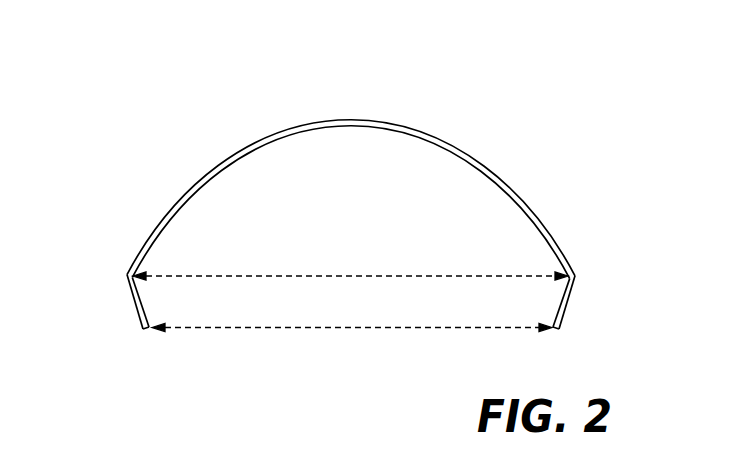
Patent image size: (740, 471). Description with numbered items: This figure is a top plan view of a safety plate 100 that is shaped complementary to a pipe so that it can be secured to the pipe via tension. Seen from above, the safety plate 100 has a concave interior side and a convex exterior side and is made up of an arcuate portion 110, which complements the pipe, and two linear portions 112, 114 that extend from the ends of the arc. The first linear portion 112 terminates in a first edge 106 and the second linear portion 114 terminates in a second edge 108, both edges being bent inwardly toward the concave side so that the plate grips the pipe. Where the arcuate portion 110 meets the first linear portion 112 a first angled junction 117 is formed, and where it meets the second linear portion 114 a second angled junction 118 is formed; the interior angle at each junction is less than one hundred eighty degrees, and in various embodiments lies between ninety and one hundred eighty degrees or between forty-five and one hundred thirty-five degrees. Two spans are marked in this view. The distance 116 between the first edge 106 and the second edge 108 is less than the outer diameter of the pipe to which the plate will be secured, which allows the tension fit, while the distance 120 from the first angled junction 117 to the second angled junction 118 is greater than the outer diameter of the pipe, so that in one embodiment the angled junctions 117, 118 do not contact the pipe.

The safety plate 100 is at (394, 56).
The arcuate portion 110 is at (258, 138).
The second linear portion 114 is at (136, 309).
The first linear portion 112 is at (568, 305).
The second edge 108 is at (147, 330).
The first edge 106 is at (554, 330).
The second angled junction 118 is at (128, 275).
The first angled junction 117 is at (574, 276).
The distance from the first angled junction to the second angled junction 120 is at (466, 276).
The distance between the first edge and the second edge 116 is at (306, 327).